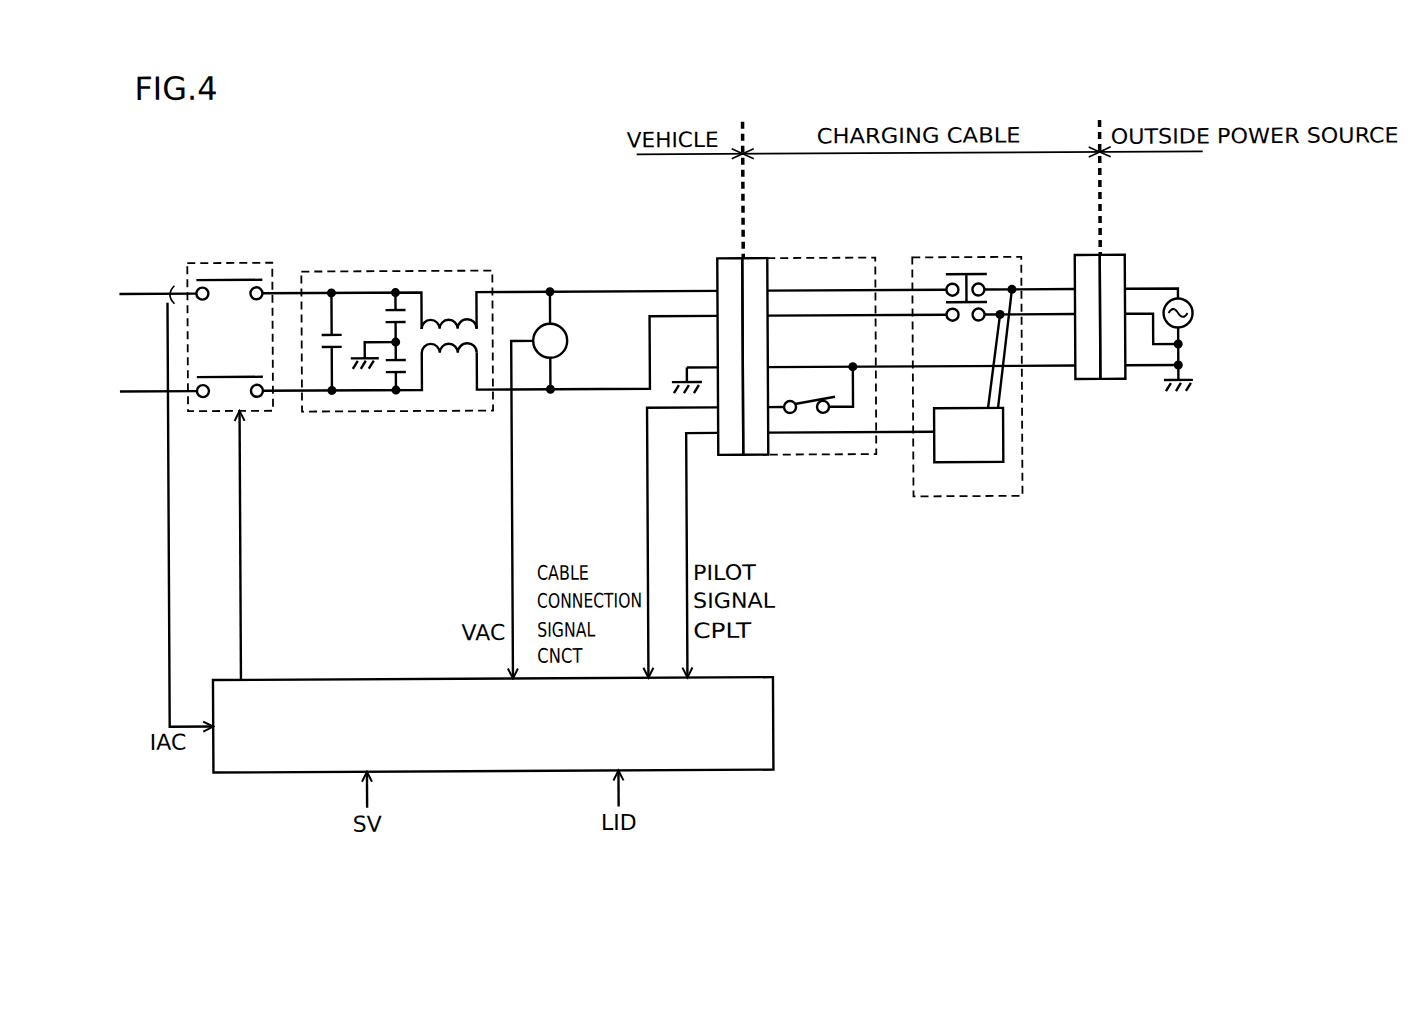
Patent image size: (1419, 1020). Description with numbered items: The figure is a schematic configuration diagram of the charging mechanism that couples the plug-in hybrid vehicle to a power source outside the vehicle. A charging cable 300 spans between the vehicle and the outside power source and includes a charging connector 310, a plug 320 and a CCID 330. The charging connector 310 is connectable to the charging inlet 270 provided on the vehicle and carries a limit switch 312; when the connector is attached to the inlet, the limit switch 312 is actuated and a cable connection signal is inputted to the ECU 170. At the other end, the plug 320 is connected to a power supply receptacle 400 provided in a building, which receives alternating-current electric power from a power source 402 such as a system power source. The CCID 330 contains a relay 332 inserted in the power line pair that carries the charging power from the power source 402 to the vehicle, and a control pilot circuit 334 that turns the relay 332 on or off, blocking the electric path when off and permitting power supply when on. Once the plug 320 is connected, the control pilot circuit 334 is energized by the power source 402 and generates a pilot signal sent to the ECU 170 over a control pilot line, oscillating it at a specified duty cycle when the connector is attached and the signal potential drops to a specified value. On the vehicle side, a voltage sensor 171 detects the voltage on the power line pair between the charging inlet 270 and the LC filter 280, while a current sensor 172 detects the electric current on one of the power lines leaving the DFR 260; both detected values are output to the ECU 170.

The ECU 170 is at (772, 722).
The voltage sensor 171 is at (568, 340).
The current sensor 172 is at (168, 300).
The DFR 260 is at (230, 260).
The charging inlet 270 is at (727, 258).
The LC filter 280 is at (396, 270).
The charging cable 300 is at (888, 251).
The charging connector 310 is at (758, 258).
The limit switch 312 is at (808, 414).
The plug 320 is at (1083, 257).
The CCID 330 is at (972, 498).
The relay 332 is at (940, 277).
The control pilot circuit 334 is at (1003, 438).
The power supply receptacle 400 is at (1116, 257).
The power source 402 is at (1194, 316).